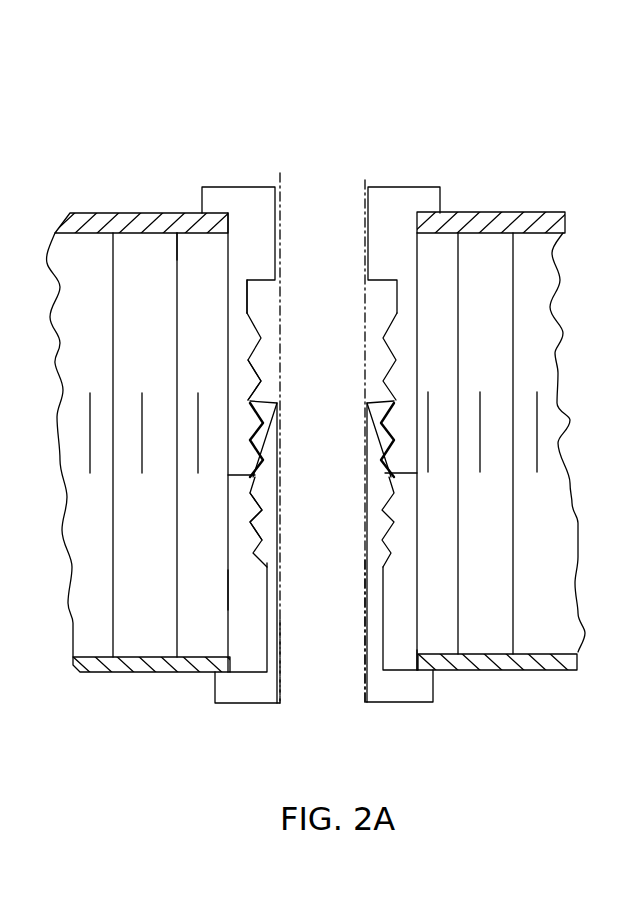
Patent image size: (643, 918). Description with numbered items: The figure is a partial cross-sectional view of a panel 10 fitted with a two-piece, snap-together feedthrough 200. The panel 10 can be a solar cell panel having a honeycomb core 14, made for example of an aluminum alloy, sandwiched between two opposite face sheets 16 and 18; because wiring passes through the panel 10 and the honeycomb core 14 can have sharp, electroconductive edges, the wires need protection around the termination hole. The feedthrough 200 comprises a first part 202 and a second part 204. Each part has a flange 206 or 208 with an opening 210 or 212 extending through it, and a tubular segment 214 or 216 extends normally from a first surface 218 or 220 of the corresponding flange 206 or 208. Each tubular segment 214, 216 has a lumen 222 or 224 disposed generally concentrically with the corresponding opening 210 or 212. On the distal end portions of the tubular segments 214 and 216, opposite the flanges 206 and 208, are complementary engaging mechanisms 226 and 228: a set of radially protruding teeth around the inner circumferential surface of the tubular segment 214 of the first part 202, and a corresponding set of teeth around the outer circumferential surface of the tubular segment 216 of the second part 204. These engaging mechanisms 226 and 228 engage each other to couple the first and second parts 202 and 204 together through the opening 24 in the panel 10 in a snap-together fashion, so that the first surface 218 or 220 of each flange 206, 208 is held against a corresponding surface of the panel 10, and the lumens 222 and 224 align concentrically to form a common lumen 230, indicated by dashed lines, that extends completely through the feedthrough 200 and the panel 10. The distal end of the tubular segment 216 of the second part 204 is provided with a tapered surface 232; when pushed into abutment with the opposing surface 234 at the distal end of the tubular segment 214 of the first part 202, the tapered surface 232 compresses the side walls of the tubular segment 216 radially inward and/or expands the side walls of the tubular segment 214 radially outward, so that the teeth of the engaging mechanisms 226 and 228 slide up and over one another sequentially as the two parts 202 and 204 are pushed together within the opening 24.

The panel 10 is at (88, 134).
The honeycomb core 14 is at (153, 328).
The face sheet 16 is at (90, 213).
The face sheet 18 is at (93, 667).
The opening 24 is at (228, 590).
The feedthrough 200 is at (465, 166).
The first part 202 is at (242, 176).
The second part 204 is at (378, 711).
The flange 206 is at (433, 187).
The flange 208 is at (223, 693).
The opening 210 is at (364, 193).
The opening 212 is at (282, 698).
The tubular segment 214 is at (280, 198).
The tubular segment 216 is at (366, 627).
The first surface 218 is at (205, 223).
The first surface 220 is at (402, 672).
The lumen 222 is at (340, 358).
The lumen 224 is at (344, 507).
The engaging mechanism 226 is at (262, 388).
The engaging mechanism 228 is at (258, 518).
The common lumen 230 is at (279, 322).
The tapered surface 232 is at (372, 402).
The opposing surface 234 is at (252, 477).